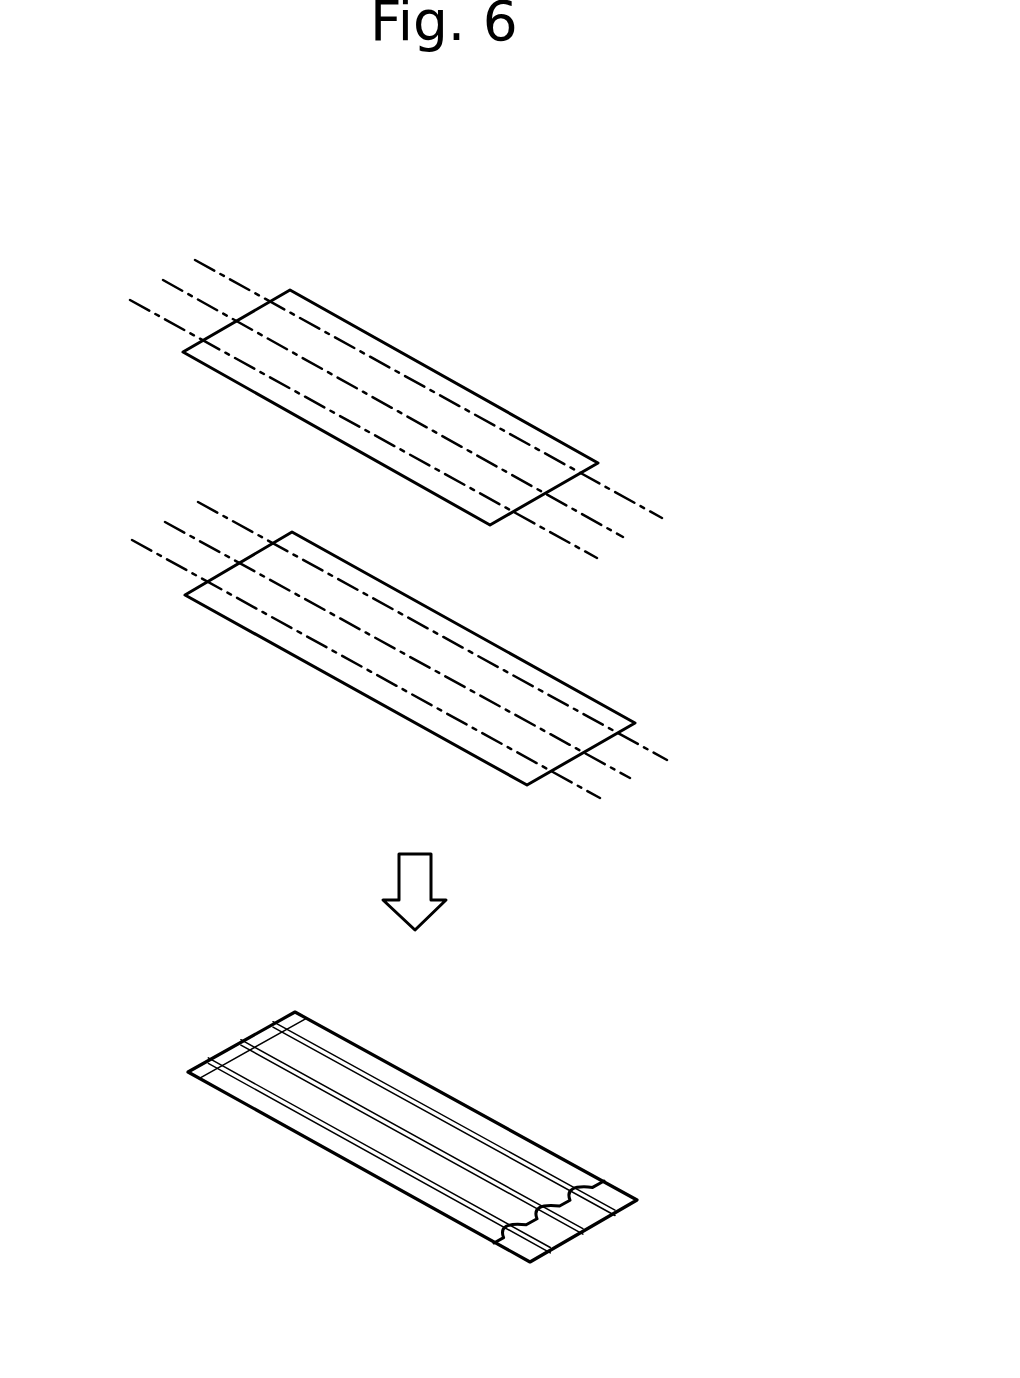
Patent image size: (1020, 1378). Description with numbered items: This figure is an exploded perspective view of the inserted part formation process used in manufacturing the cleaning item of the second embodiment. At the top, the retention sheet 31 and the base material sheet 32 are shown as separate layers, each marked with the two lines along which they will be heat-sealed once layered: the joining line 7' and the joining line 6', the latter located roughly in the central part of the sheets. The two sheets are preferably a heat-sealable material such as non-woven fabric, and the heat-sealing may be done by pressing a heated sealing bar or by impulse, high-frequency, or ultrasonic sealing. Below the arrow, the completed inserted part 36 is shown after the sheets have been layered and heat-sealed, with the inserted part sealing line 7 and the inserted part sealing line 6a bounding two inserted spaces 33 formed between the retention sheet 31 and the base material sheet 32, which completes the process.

The retention sheet 31 is at (217, 372).
The base material sheet 32 is at (218, 612).
The joining line 7' is at (457, 571).
The joining line 6' is at (444, 563).
The inserted part sealing line 7 is at (411, 1135).
The inserted part sealing line 6a is at (448, 1152).
The inserted space 33 is at (535, 1227).
The inserted part 36 is at (225, 1135).